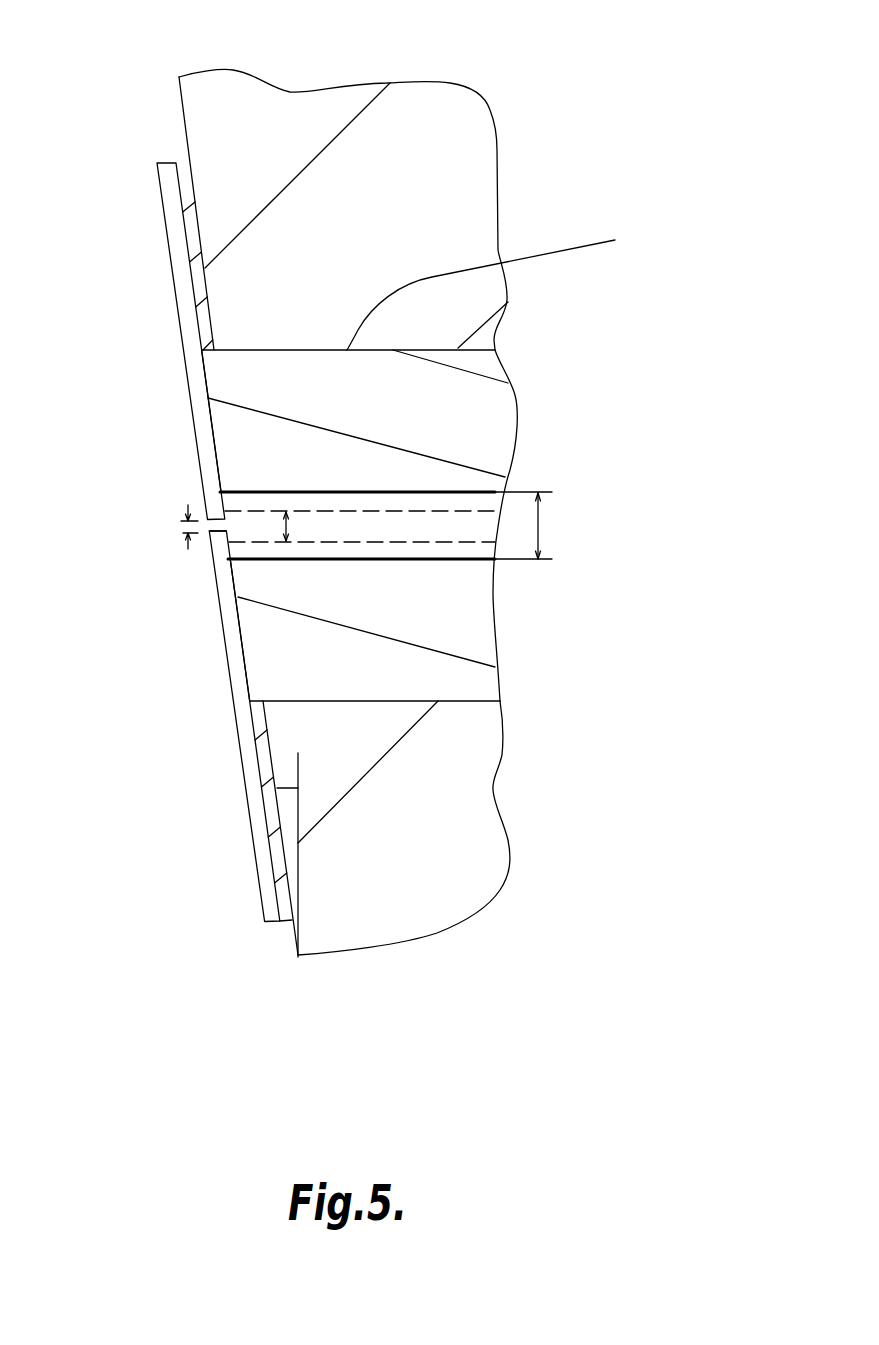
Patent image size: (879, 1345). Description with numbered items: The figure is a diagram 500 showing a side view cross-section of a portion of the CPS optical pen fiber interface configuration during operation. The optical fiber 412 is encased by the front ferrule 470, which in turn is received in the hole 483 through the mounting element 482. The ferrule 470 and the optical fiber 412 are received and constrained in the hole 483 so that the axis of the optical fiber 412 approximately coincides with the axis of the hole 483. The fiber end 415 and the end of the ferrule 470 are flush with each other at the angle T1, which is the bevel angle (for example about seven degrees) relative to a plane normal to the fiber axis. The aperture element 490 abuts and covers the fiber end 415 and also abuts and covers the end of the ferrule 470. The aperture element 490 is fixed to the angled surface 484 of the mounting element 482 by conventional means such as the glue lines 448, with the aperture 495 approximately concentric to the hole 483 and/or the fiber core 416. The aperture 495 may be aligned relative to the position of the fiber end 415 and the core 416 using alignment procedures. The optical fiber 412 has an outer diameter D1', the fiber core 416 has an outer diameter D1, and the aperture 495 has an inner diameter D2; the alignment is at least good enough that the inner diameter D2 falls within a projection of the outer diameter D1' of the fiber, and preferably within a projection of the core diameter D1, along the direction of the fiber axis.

The diagram 500 is at (643, 72).
The mounting element 482 is at (462, 135).
The angled surface 484 is at (177, 102).
The glue lines 448 is at (181, 167).
The aperture element 490 is at (175, 240).
The hole 483 is at (503, 287).
The front ferrule 470 is at (488, 403).
The fiber end 415 is at (222, 493).
The optical fiber 412 is at (427, 490).
The fiber core 416 is at (490, 525).
The aperture 495 is at (210, 535).
The outer diameter of the fiber core D1 is at (361, 497).
The outer diameter of the optical fiber D1' is at (581, 529).
The inner diameter of the aperture D2 is at (188, 512).
The bevel angle T1 is at (288, 787).